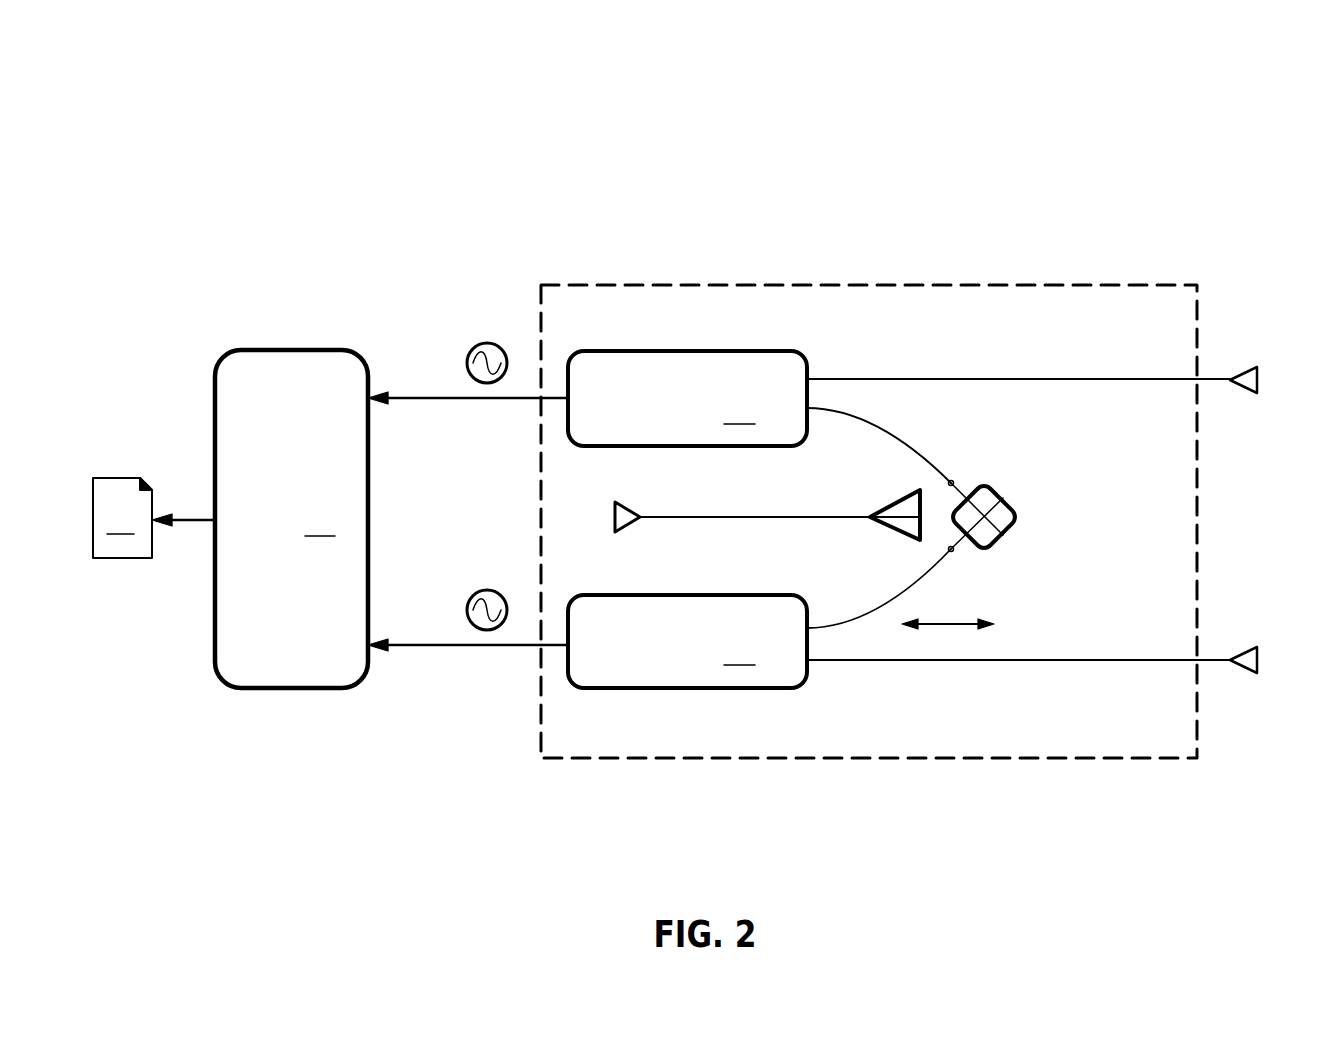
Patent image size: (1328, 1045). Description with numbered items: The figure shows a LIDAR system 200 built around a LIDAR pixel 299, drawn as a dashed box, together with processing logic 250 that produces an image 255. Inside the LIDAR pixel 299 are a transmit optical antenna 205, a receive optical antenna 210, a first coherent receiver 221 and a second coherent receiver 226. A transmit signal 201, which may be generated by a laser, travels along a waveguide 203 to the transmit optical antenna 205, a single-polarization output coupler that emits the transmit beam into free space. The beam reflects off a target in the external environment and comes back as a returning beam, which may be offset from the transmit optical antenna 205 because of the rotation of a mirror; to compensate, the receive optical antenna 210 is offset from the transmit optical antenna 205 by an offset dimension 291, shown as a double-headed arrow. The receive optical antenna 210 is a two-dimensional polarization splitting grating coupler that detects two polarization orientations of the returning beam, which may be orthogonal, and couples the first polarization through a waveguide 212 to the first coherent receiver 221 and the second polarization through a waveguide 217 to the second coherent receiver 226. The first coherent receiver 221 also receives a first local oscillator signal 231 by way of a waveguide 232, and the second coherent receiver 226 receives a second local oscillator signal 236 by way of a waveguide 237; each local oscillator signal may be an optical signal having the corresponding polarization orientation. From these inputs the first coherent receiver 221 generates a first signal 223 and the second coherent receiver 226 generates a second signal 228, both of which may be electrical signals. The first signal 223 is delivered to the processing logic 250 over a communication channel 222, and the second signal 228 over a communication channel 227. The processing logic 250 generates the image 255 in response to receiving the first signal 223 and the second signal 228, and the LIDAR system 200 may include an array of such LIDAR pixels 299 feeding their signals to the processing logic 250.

The LIDAR system 200 is at (1311, 52).
The LIDAR pixel 299 is at (543, 283).
The processing logic 250 is at (291, 519).
The image 255 is at (122, 518).
The first coherent receiver 221 is at (687, 398).
The second coherent receiver 226 is at (687, 641).
The first signal 223 is at (478, 342).
The second signal 228 is at (471, 590).
The communication channel 222 is at (467, 405).
The communication channel 227 is at (497, 651).
The transmit signal 201 is at (620, 500).
The waveguide 203 is at (748, 521).
The transmit optical antenna 205 is at (890, 533).
The waveguide 212 is at (887, 433).
The waveguide 217 is at (873, 610).
The receive optical antenna 210 is at (1012, 498).
The offset dimension 291 is at (950, 628).
The waveguide 232 is at (907, 373).
The waveguide 237 is at (947, 667).
The first local oscillator signal 231 is at (1257, 363).
The second local oscillator signal 236 is at (1257, 643).